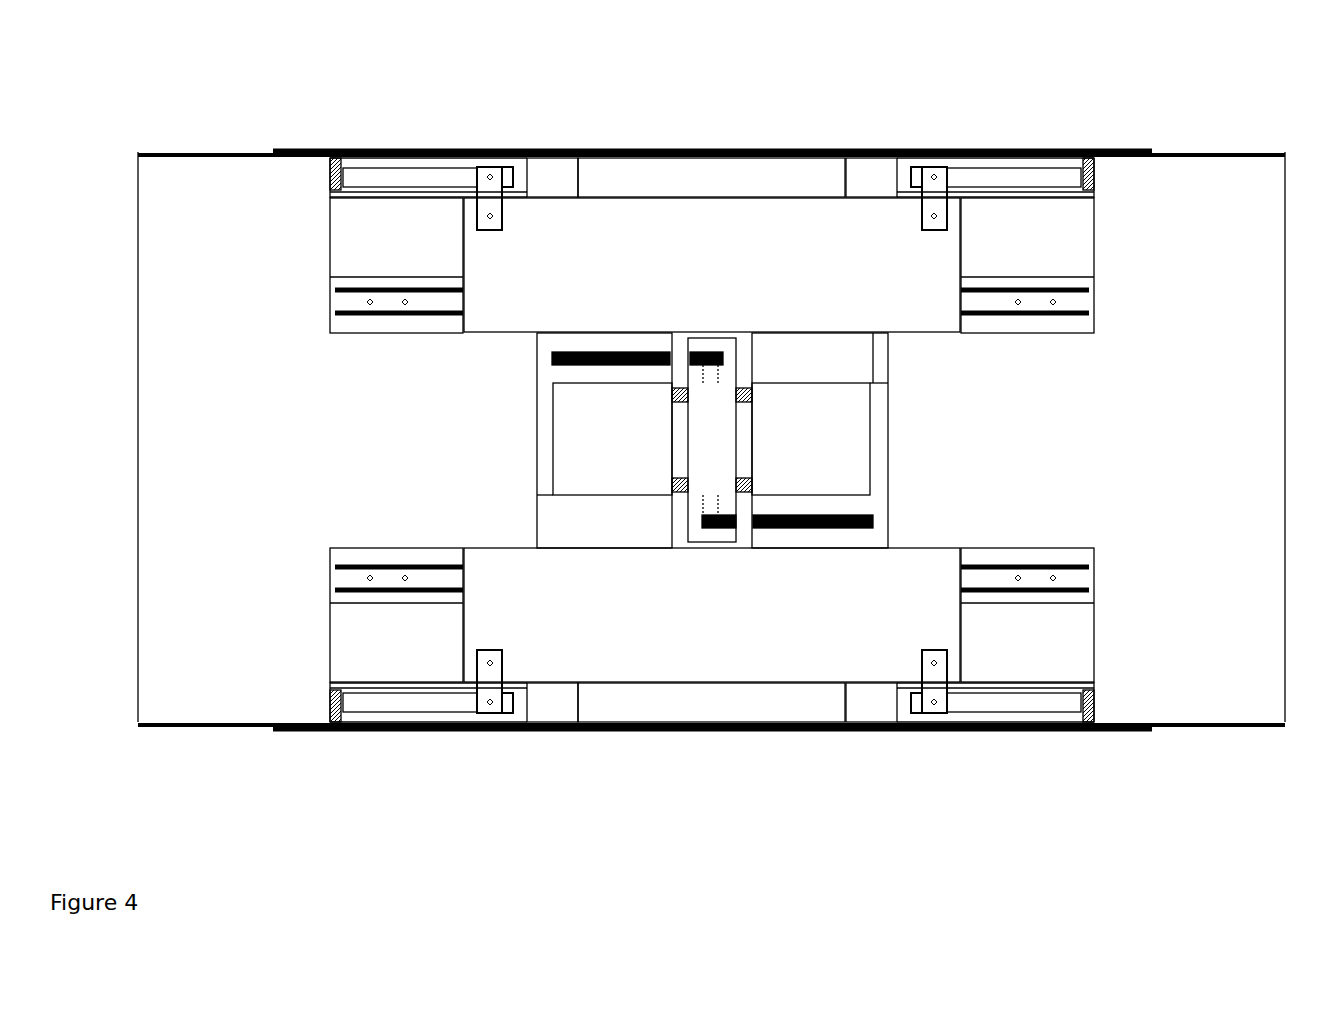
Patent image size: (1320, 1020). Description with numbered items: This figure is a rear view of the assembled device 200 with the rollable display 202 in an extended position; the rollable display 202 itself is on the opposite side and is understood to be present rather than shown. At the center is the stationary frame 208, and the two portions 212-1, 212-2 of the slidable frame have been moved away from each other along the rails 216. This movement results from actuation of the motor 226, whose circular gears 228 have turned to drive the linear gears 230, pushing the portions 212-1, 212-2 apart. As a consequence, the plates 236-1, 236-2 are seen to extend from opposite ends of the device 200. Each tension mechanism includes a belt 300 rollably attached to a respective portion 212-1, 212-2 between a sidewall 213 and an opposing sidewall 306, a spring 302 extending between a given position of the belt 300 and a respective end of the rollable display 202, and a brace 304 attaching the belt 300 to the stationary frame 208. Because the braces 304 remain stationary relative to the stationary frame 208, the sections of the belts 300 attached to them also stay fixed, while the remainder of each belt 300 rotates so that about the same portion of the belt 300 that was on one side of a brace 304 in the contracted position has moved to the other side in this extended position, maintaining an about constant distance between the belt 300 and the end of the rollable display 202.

The device 200 is at (1043, 83).
The rollable display 202 is at (433, 258).
The stationary frame 208 is at (709, 305).
The first portion of the slidable frame 212-1 is at (865, 360).
The second portion of the slidable frame 212-2 is at (662, 545).
The sidewall 213 is at (357, 158).
The rail 216 is at (342, 307).
The motor 226 is at (733, 456).
The circular gear 228 is at (722, 363).
The linear gear 230 is at (553, 358).
The first plate 236-1 is at (242, 463).
The second plate 236-2 is at (1252, 453).
The belt 300 is at (427, 172).
The spring 302 is at (332, 158).
The brace 304 is at (492, 173).
The opposing sidewall 306 is at (335, 192).